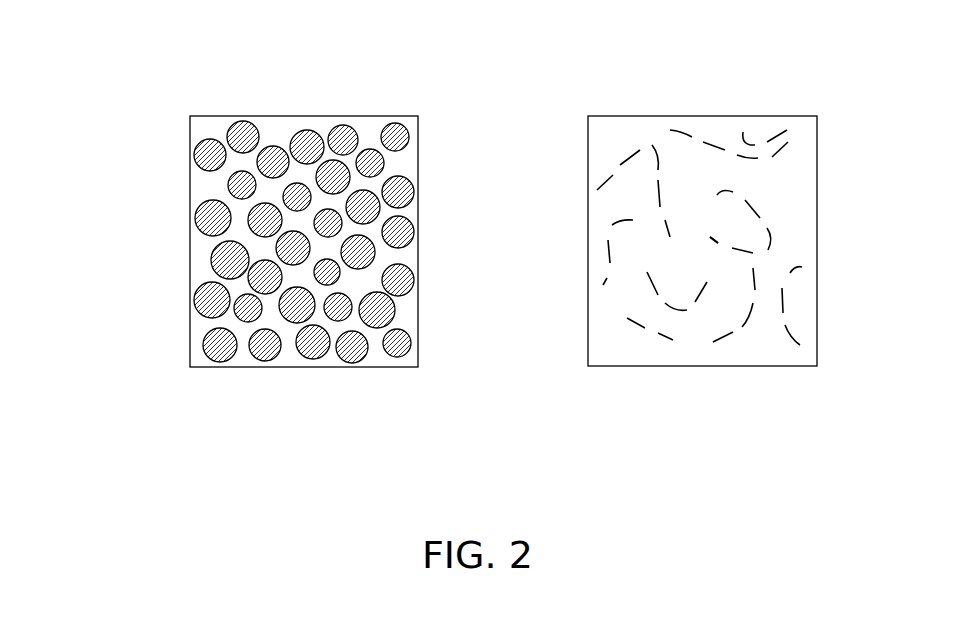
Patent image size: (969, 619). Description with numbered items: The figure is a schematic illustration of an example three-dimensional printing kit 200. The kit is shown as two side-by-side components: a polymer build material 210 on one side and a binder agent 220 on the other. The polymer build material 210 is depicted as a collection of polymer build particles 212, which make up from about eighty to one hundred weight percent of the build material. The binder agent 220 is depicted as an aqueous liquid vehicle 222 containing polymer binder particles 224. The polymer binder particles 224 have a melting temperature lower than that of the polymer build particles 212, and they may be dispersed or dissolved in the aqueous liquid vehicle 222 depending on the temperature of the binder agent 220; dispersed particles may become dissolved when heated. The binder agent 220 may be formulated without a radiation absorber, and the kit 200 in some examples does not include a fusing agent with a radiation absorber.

The three-dimensional printing kit 200 is at (193, 80).
The polymer build material 210 is at (417, 378).
The polymer build particles 212 is at (377, 163).
The binder agent 220 is at (817, 385).
The aqueous liquid vehicle 222 is at (790, 220).
The polymer binder particles 224 is at (783, 300).